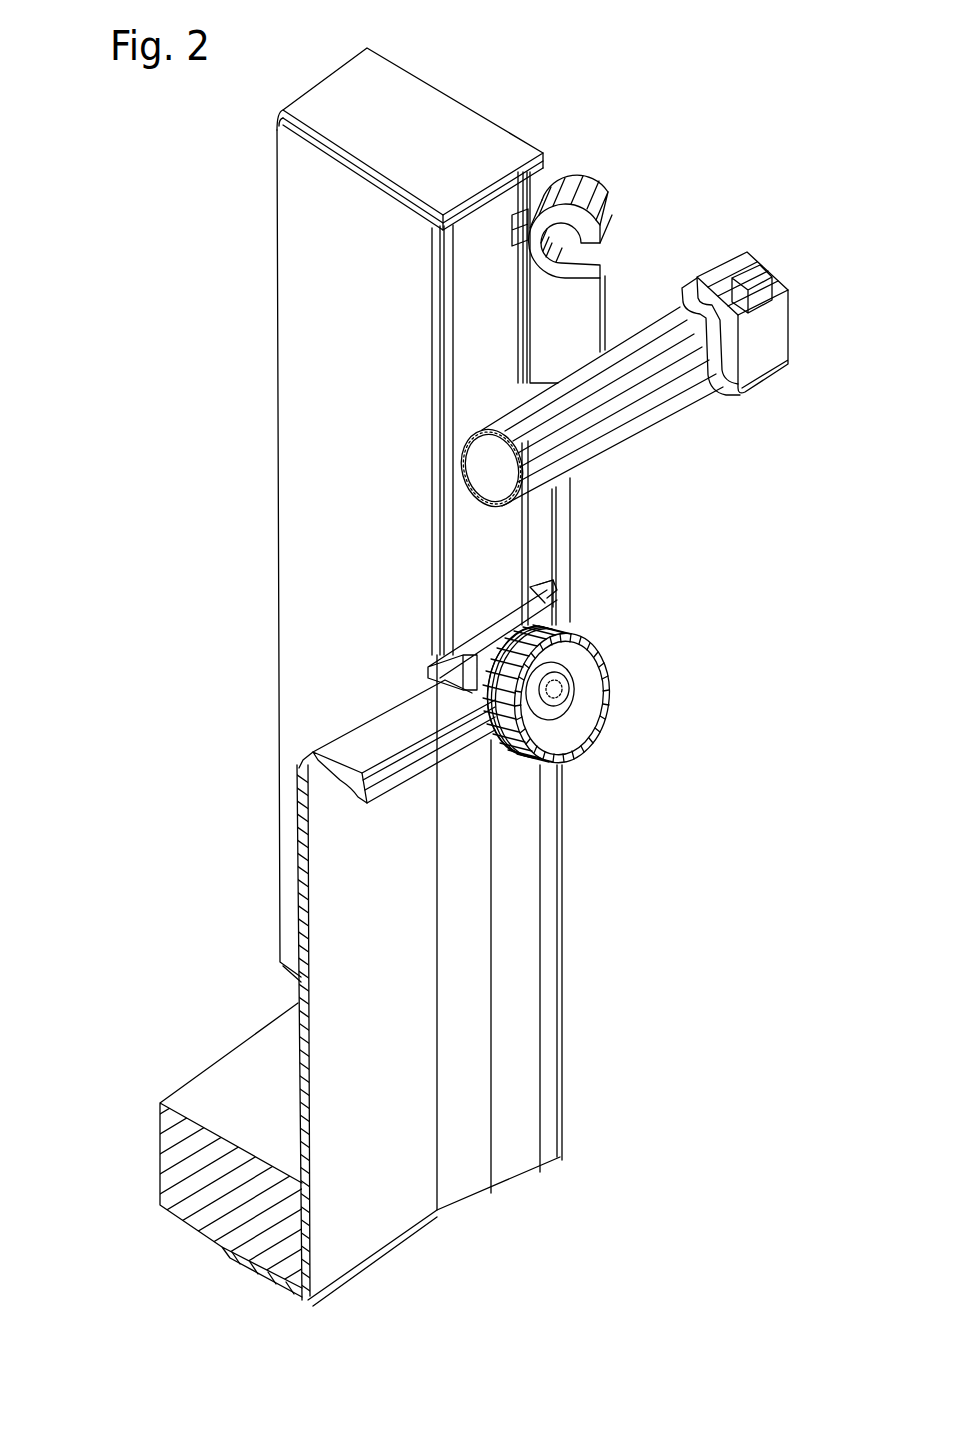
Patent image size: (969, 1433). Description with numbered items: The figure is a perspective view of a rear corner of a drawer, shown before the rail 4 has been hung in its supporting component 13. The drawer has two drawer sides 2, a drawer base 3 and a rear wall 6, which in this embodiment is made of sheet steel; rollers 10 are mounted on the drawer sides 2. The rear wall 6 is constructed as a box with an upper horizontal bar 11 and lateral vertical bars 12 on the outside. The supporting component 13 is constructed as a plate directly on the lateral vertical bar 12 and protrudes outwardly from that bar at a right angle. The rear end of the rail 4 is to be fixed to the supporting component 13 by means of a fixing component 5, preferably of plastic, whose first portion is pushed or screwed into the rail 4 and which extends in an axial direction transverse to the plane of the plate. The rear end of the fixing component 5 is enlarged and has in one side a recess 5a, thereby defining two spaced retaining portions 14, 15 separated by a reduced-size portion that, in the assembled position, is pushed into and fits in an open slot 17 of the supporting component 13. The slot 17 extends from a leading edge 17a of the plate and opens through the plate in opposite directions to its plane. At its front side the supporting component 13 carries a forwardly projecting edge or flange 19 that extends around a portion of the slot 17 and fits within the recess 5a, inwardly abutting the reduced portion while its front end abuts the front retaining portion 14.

The drawer sides 2 is at (407, 1083).
The drawer base 3 is at (183, 1157).
The rail 4 is at (562, 447).
The fixing component 5 is at (773, 385).
The recess 5a is at (737, 290).
The rear wall 6 is at (342, 545).
The rollers 10 is at (575, 737).
The upper horizontal bar 11 is at (375, 100).
The lateral vertical bars 12 is at (490, 340).
The supporting component 13 is at (602, 197).
The front retaining portion 14 is at (706, 300).
The rear retaining portion 15 is at (753, 278).
The open slot 17 is at (600, 255).
The leading edge 17a is at (602, 313).
The flange 19 is at (558, 213).